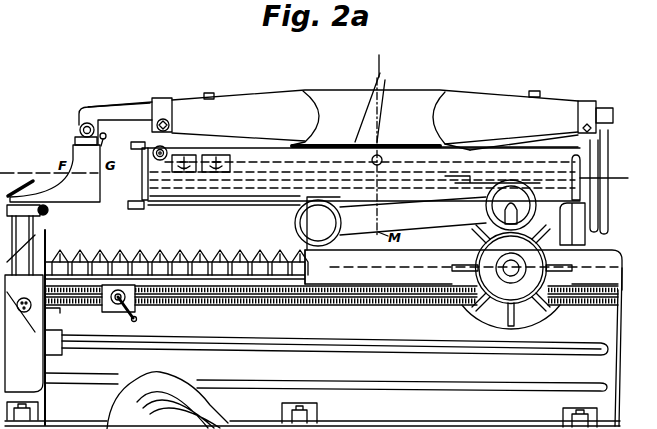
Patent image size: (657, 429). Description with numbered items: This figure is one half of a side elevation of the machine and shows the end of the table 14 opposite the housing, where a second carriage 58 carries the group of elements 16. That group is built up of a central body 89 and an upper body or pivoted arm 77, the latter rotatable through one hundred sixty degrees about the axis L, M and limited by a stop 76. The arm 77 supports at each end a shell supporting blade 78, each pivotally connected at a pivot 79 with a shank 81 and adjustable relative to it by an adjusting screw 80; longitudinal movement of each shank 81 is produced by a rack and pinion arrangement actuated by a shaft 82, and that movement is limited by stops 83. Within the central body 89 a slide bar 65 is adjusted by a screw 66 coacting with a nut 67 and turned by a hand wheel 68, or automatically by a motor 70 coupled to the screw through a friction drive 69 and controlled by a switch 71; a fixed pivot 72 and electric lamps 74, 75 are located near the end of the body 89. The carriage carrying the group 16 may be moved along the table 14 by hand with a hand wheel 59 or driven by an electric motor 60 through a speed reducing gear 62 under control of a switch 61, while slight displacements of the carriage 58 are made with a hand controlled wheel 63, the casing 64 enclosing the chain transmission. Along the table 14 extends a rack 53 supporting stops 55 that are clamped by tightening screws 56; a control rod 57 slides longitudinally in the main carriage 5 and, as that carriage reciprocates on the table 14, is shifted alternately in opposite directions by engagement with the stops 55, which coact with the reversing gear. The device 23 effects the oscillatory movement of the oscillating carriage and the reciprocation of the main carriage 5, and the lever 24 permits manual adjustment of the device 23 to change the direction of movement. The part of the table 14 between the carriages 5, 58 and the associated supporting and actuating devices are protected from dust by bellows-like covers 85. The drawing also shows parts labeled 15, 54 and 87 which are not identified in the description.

The main carriage 5 is at (25, 320).
The table 14 is at (326, 340).
The lower rail 15 is at (331, 354).
The group of elements 16 is at (352, 95).
The device 23 is at (48, 211).
The lever 24 is at (32, 184).
The rack 53 is at (331, 302).
The escapement rack 54 is at (275, 303).
The stops 55 is at (117, 309).
The tightening screws 56 is at (138, 310).
The control rod 57 is at (58, 312).
The second carriage 58 is at (463, 270).
The hand wheel 59 is at (473, 225).
The electric motor 60 is at (511, 205).
The switch 61 is at (230, 175).
The speed reducing gear 62 is at (534, 320).
The hand controlled wheel 63 is at (300, 236).
The casing 64 is at (413, 216).
The slide bar 65 is at (284, 188).
The screw 66 is at (468, 181).
The nut 67 is at (552, 178).
The hand wheel 68 is at (606, 216).
The friction drive 69 is at (604, 234).
The motor 70 is at (572, 224).
The switch 71 is at (190, 175).
The fixed pivot 72 is at (158, 163).
The electric lamp 74 is at (136, 210).
The electric lamp 75 is at (139, 142).
The stop 76 is at (382, 160).
The pivoted arm 77 is at (328, 120).
The shell supporting blade 78 is at (50, 173).
The pivot 79 is at (80, 129).
The adjusting screw 80 is at (106, 138).
The shank 81 is at (97, 106).
The shaft 82 is at (168, 131).
The stops 83 is at (163, 96).
The bellows-like covers 85 is at (172, 257).
The block 87 is at (612, 112).
The central body 89 is at (244, 205).